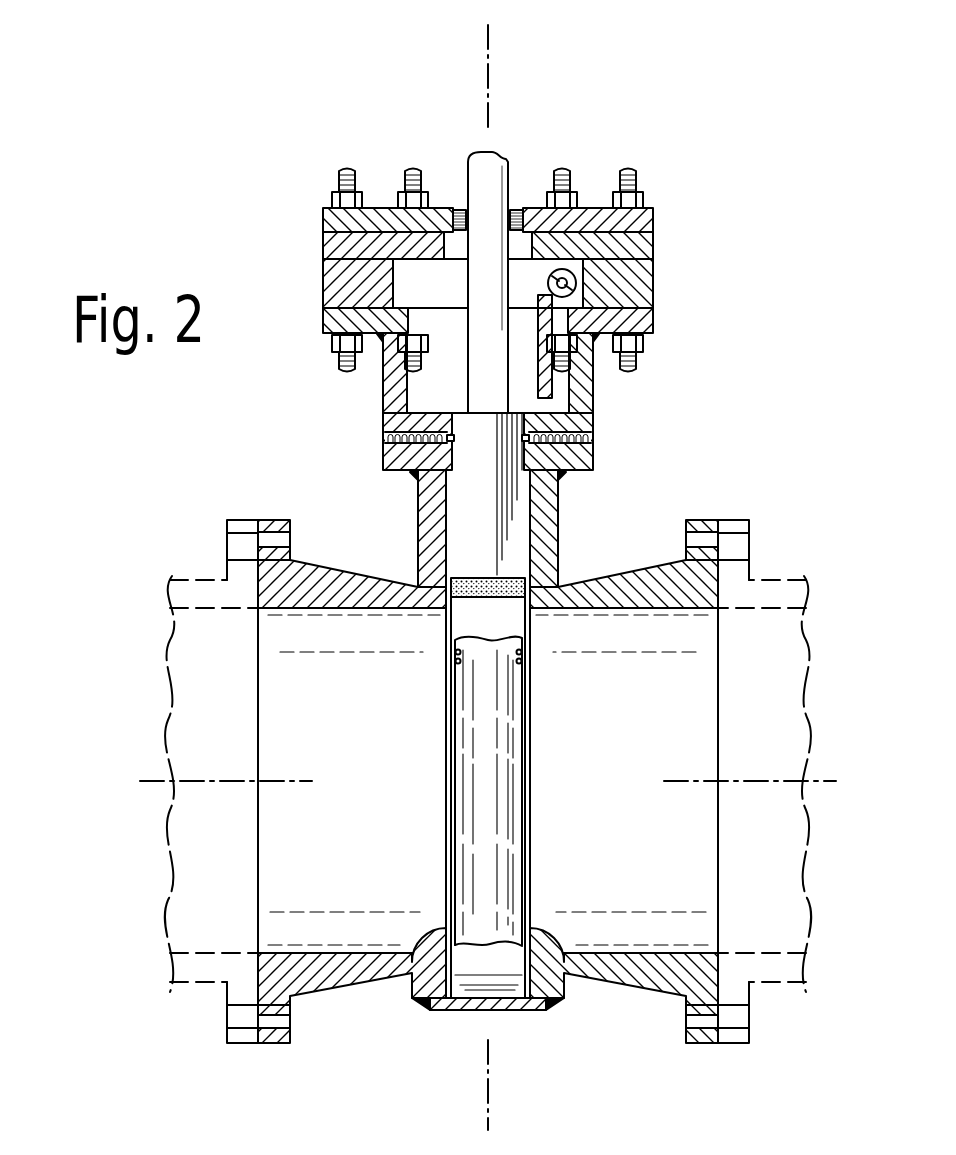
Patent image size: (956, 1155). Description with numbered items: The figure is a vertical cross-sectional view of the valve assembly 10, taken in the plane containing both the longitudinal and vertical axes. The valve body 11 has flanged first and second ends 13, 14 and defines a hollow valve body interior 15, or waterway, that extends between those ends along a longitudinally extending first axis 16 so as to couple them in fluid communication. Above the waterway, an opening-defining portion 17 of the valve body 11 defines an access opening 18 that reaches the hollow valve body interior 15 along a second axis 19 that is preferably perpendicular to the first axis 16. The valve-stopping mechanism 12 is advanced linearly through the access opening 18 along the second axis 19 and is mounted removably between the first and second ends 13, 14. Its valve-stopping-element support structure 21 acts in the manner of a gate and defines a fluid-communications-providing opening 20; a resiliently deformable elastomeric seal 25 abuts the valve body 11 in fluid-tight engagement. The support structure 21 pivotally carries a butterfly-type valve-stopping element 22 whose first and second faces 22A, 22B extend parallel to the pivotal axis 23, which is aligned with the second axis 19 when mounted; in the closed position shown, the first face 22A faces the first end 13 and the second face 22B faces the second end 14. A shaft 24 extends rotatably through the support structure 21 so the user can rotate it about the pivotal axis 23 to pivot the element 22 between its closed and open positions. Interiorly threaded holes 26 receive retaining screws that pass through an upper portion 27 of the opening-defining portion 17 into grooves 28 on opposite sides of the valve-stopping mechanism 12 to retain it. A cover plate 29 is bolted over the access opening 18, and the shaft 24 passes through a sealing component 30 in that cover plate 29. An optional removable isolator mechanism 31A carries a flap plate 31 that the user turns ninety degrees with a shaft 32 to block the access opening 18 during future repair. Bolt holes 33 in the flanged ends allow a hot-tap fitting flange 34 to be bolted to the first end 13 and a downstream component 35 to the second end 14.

The valve assembly 10 is at (232, 122).
The valve body 11 is at (322, 996).
The valve-stopping mechanism 12 is at (467, 150).
The first end 13 is at (257, 682).
The second end 14 is at (722, 692).
The hollow valve body interior 15 is at (625, 703).
The first axis 16 is at (153, 780).
The opening-defining portion 17 is at (418, 528).
The access opening 18 is at (428, 371).
The second axis 19 is at (490, 52).
The fluid-communications-providing opening 20 is at (527, 790).
The valve-stopping-element support structure 21 is at (470, 612).
The valve-stopping element 22 is at (518, 668).
The first face 22A is at (408, 976).
The second face 22B is at (566, 976).
The pivotal axis 23 is at (552, 577).
The shaft 24 is at (510, 156).
The elastomeric seal 25 is at (531, 572).
The threaded holes 26 is at (593, 437).
The upper portion 27 is at (323, 318).
The grooves 28 is at (578, 462).
The cover plate 29 is at (654, 212).
The sealing component 30 is at (517, 206).
The flap plate 31 is at (553, 372).
The isolator mechanism 31A is at (654, 243).
The shaft 32 is at (576, 288).
The bolt holes 33 is at (696, 1018).
The hot-tap fitting flange 34 is at (178, 982).
The downstream component 35 is at (800, 984).